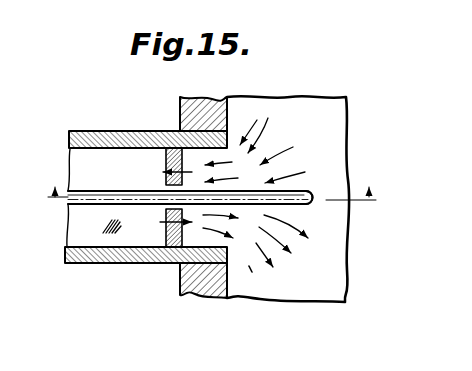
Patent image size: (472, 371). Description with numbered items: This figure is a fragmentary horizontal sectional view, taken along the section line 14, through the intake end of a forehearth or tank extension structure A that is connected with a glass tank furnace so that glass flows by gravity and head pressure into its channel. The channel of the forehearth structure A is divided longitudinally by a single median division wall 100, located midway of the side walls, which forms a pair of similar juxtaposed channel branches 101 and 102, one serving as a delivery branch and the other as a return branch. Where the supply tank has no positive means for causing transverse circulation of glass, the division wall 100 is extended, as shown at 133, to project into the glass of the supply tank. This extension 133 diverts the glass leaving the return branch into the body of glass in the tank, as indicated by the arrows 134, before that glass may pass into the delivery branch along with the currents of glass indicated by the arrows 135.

The longitudinal division wall 100 is at (83, 200).
The channel branch 101 is at (92, 162).
The channel branch 102 is at (139, 247).
The division wall extension 133 is at (289, 200).
The arrows indicating diverted glass 134 is at (278, 236).
The arrows indicating glass currents 135 is at (234, 143).
The section line of Fig. 14 is at (211, 182).
The forehearth or tank extension structure A is at (78, 267).